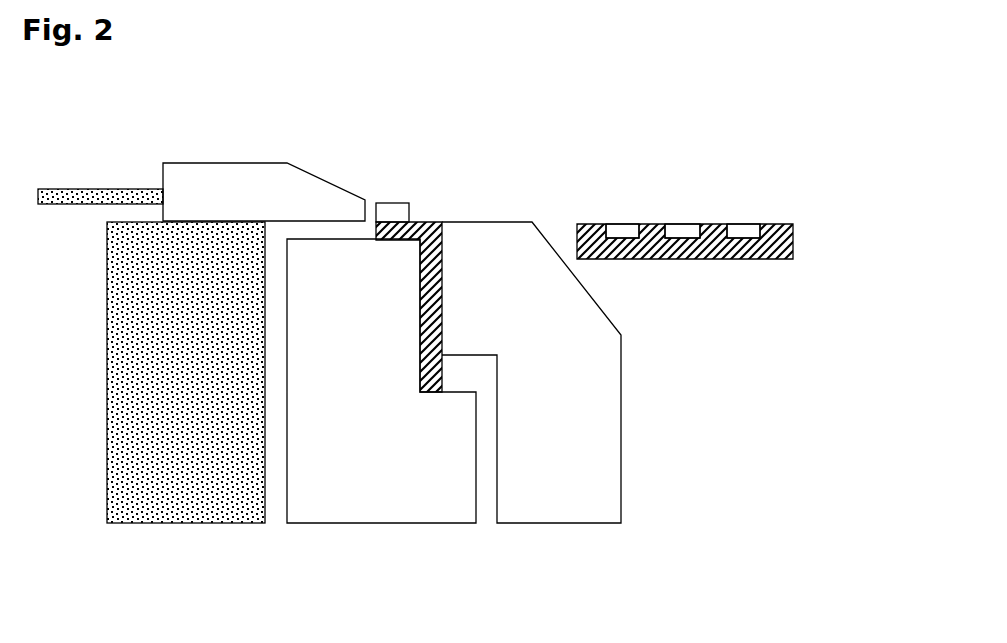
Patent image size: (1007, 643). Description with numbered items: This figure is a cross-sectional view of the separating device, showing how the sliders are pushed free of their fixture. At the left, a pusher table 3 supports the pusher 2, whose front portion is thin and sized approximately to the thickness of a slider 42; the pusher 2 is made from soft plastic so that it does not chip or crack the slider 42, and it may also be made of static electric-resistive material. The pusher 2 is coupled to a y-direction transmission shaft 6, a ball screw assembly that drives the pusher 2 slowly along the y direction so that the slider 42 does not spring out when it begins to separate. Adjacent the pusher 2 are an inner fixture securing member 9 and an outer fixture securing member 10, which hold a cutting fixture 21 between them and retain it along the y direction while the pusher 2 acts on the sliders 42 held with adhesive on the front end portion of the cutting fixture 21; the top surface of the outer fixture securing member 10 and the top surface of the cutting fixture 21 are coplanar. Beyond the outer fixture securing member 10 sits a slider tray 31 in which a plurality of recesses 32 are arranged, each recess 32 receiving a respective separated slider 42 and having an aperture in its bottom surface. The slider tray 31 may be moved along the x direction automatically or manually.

The pusher 2 is at (227, 163).
The pusher table 3 is at (115, 523).
The y-direction transmission shaft 6 is at (98, 188).
The inner fixture securing member 9 is at (369, 523).
The outer fixture securing member 10 is at (622, 467).
The cutting fixture 21 is at (432, 222).
The slider 42 is at (393, 203).
The slider tray 31 is at (703, 225).
The recess 32 is at (733, 238).